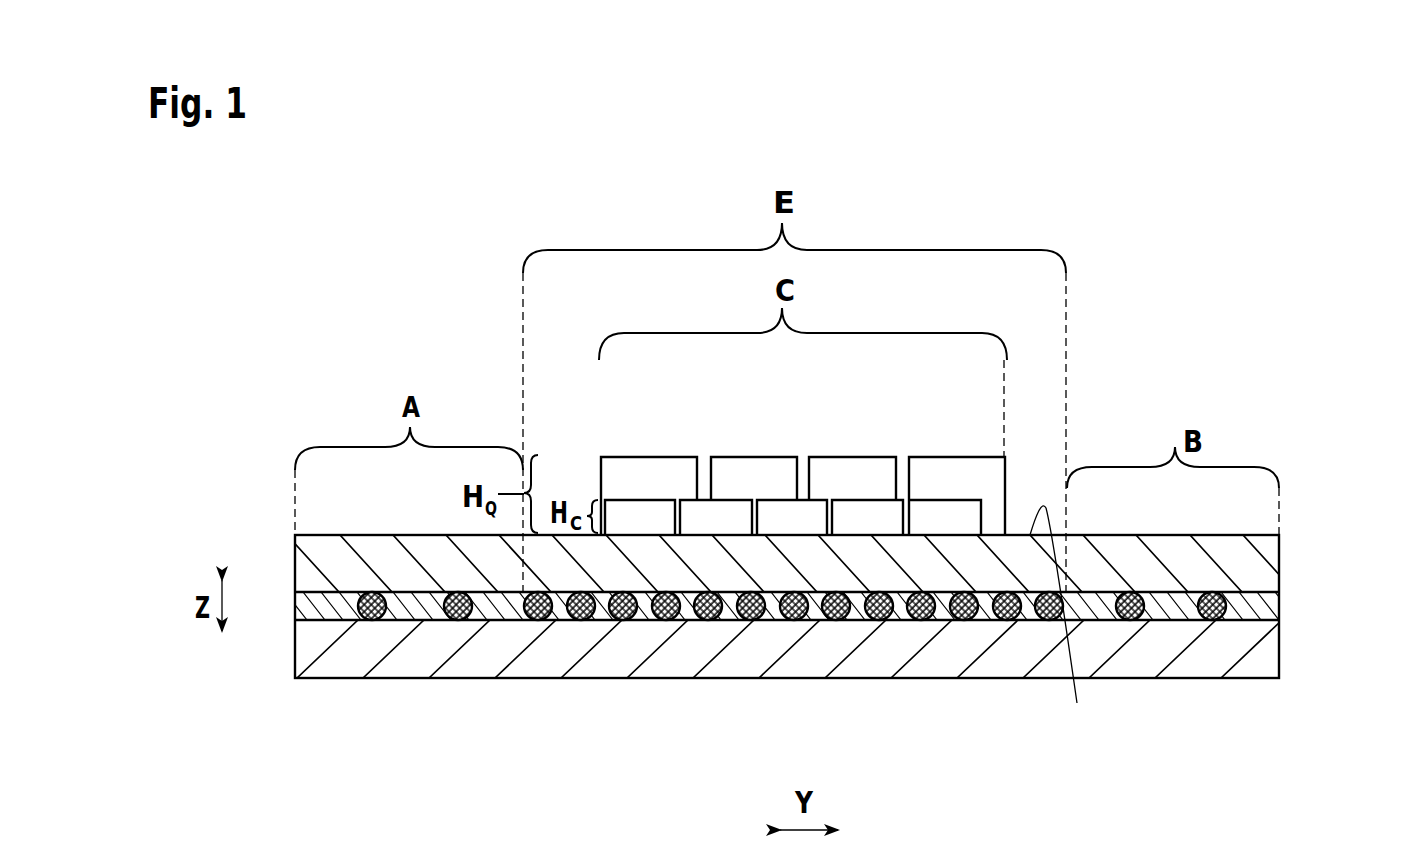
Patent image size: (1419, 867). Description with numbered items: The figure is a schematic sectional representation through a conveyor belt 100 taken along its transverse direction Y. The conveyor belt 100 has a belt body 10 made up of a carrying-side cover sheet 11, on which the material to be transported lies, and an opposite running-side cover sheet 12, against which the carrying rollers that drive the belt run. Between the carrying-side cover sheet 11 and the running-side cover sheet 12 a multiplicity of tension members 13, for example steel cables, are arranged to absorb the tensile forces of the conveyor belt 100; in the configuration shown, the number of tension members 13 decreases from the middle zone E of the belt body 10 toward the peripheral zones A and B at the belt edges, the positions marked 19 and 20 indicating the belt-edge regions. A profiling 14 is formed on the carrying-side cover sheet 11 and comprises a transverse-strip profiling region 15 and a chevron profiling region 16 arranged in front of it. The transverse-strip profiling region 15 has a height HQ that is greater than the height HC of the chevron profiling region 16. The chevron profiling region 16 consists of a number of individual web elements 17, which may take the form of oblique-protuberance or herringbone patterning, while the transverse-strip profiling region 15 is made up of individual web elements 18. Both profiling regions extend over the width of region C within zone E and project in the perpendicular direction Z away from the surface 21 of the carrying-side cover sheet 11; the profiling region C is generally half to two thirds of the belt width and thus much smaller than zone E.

The belt body 10 is at (794, 677).
The carrying-side cover sheet 11 is at (1262, 566).
The running-side cover sheet 12 is at (645, 648).
The tension members 13 is at (542, 620).
The profiling 14 is at (829, 422).
The transverse-strip profiling region 15 is at (868, 447).
The chevron profiling region 16 is at (986, 514).
The web elements 17 is at (848, 515).
The web elements 18 is at (728, 472).
The first surface region 19 is at (312, 535).
The second surface region 20 is at (1253, 535).
The surface 21 is at (1059, 625).
The conveyor belt 100 is at (290, 404).